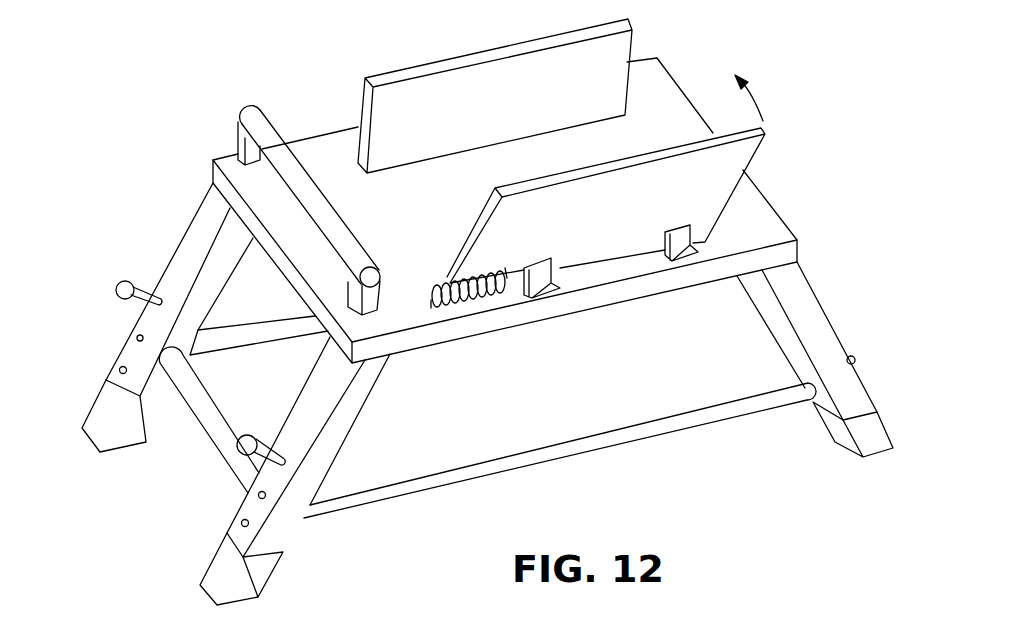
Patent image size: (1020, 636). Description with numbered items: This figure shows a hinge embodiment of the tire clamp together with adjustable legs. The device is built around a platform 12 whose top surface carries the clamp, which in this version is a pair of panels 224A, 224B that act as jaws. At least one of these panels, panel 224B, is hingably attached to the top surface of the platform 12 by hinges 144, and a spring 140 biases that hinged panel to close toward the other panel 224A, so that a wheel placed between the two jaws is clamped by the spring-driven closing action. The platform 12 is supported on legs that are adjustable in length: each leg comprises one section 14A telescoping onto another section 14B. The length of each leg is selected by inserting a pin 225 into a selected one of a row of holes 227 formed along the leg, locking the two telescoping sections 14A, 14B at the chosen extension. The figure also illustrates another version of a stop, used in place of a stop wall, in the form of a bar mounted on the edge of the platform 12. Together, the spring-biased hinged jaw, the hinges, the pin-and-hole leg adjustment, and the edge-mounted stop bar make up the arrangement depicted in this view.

The platform 12 is at (750, 223).
The leg section 14A is at (193, 240).
The leg section 14B is at (92, 407).
The spring 140 is at (477, 297).
The hinges 144 is at (675, 260).
The panel 224A is at (612, 58).
The panel 224B is at (740, 157).
The pin 225 is at (117, 282).
The holes 227 is at (123, 372).